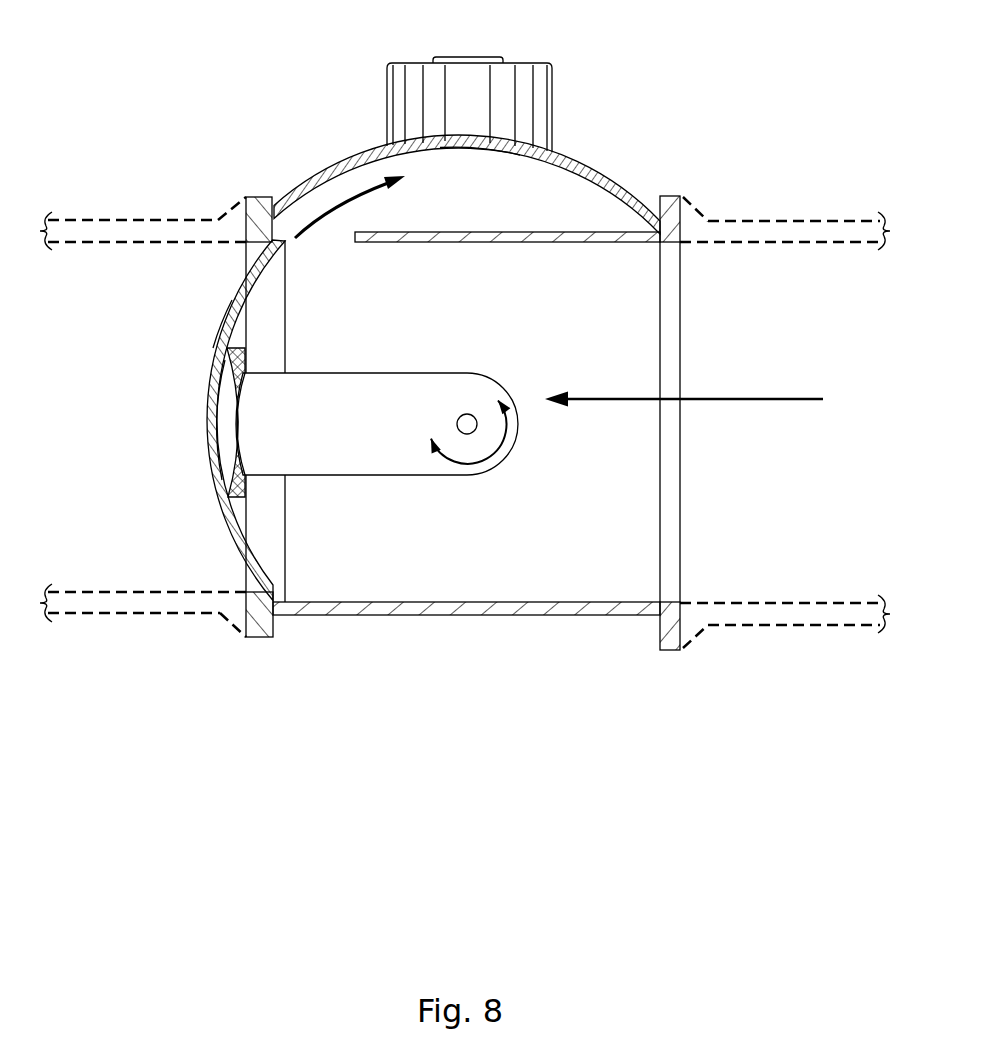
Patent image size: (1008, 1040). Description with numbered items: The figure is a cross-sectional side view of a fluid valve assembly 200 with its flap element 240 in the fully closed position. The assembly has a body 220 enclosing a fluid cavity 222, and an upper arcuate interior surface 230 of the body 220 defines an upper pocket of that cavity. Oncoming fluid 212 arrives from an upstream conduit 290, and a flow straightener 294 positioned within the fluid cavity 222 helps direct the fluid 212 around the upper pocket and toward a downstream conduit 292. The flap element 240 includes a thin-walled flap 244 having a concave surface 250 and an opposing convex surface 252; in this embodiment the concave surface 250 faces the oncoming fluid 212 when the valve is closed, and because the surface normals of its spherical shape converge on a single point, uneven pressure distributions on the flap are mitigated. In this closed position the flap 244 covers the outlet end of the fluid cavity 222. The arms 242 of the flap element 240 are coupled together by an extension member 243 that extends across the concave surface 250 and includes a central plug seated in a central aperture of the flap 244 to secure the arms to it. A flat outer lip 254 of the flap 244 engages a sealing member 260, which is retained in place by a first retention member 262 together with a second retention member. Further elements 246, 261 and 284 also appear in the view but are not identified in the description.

The fluid valve assembly 200 is at (465, 362).
The oncoming fluid 212 is at (780, 398).
The body 220 is at (568, 148).
The fluid cavity 222 is at (609, 442).
The upper arcuate interior surface 230 is at (490, 152).
The flap element 240 is at (198, 468).
The arms 242 is at (427, 373).
The extension member 243 is at (210, 412).
The flap 244 is at (212, 322).
The rotation of piston 246 is at (493, 452).
The concave surface 250 is at (243, 312).
The convex surface 252 is at (355, 204).
The flat outer lip 254 is at (287, 247).
The sealing member 260 is at (248, 592).
The upper flange 261 is at (247, 197).
The first retention member 262 is at (265, 622).
The cap 284 is at (528, 73).
The upstream conduit 290 is at (762, 221).
The downstream conduit 292 is at (147, 220).
The flow straightener 294 is at (572, 231).